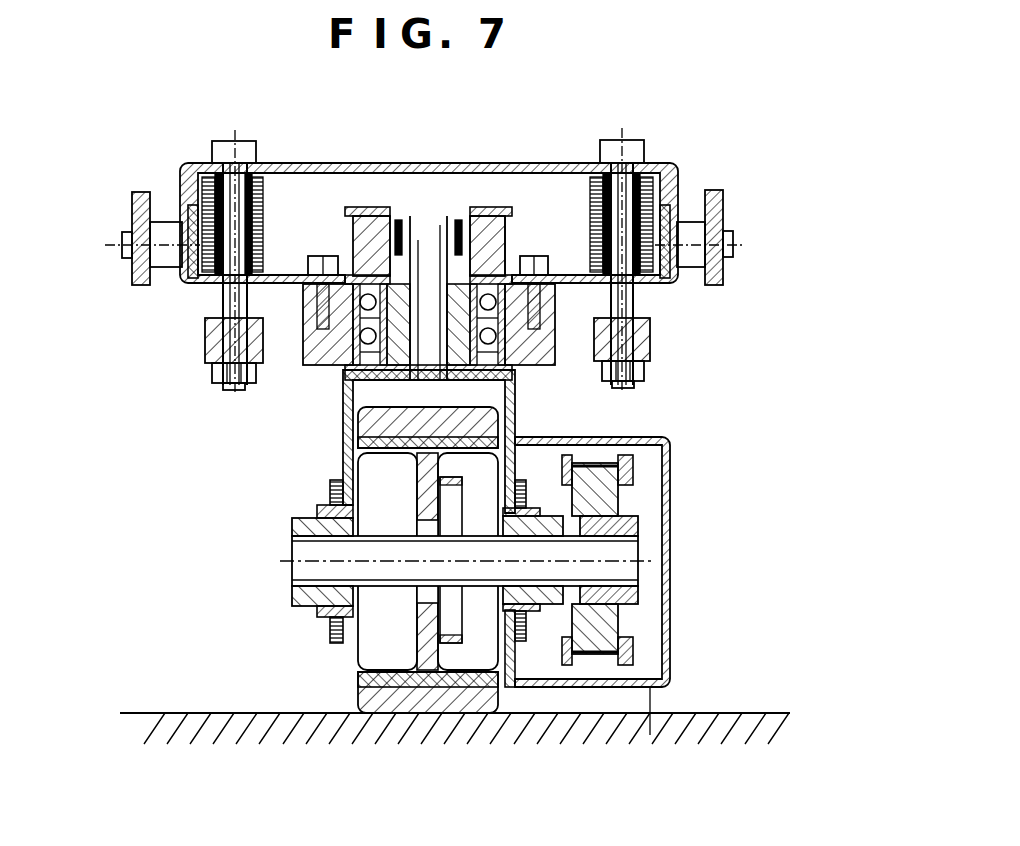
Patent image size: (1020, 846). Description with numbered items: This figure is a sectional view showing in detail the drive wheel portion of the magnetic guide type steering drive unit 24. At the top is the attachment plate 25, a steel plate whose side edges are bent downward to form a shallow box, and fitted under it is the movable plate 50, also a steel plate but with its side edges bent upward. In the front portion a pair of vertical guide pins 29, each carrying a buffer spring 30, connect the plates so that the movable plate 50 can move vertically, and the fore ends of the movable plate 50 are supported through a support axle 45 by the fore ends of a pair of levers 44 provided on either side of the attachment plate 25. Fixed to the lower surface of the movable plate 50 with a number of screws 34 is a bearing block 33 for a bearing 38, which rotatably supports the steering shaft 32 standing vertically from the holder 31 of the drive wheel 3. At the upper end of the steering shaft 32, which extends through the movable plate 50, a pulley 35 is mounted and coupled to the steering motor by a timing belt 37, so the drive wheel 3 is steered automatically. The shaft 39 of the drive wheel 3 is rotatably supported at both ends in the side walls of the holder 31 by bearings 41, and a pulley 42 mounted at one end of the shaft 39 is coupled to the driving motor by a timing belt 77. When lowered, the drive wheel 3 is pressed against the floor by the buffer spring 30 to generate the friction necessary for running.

The drive wheel 3 is at (358, 700).
The steering drive unit 24 is at (142, 163).
The attachment plate 25 is at (512, 163).
The vertical guide pins 29 is at (230, 141).
The buffer spring 30 is at (265, 200).
The holder 31 is at (343, 425).
The steering shaft 32 is at (415, 230).
The bearing block 33 is at (315, 300).
The screws 34 is at (320, 260).
The pulley 35 is at (352, 230).
The timing belt 37 is at (513, 238).
The bearing 38 is at (500, 355).
The shaft 39 is at (300, 543).
The bearings 41 is at (300, 598).
The pulley 42 is at (638, 503).
The levers 44 is at (132, 212).
The support axle 45 is at (122, 248).
The movable plate 50 is at (190, 287).
The timing belt 77 is at (607, 460).